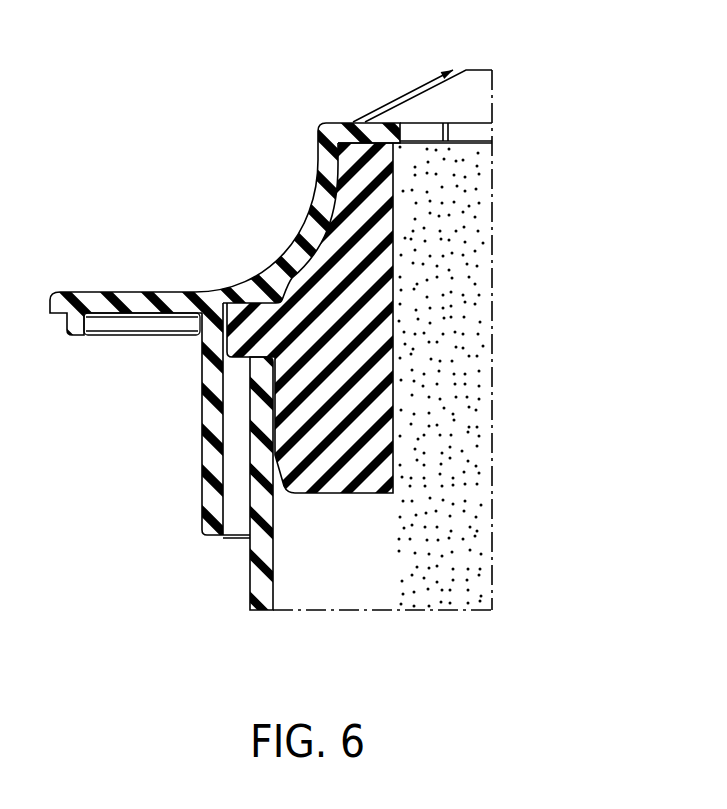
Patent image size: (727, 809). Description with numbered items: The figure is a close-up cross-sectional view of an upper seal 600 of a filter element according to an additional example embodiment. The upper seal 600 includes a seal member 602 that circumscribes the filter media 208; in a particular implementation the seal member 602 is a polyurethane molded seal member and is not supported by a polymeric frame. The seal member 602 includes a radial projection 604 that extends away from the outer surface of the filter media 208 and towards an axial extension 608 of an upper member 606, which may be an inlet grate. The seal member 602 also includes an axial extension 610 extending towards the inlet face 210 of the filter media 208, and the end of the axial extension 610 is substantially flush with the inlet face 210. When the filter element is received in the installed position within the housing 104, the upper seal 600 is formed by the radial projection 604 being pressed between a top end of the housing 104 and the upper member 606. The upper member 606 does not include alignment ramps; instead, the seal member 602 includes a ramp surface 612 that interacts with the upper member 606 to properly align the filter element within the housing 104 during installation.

The upper seal 600 is at (180, 103).
The seal member 602 is at (296, 418).
The radial projection 604 is at (242, 340).
The upper member 606 is at (323, 195).
The axial extension 608 is at (212, 487).
The axial extension 610 is at (368, 180).
The ramp surface 612 is at (323, 240).
The filter media 208 is at (466, 267).
The inlet face 210 is at (473, 123).
The housing 104 is at (264, 584).